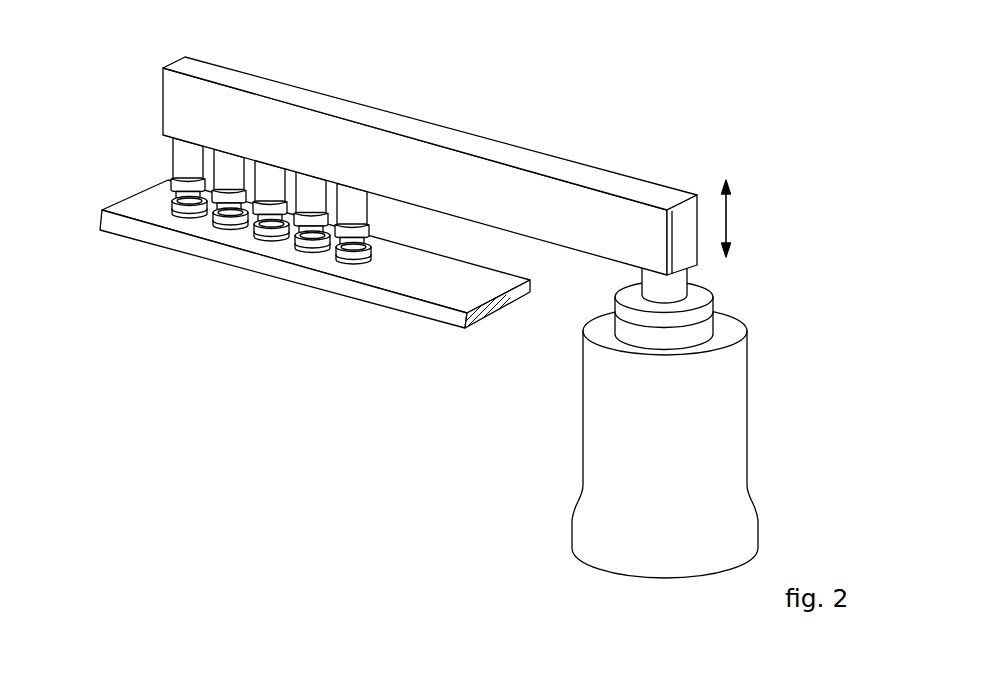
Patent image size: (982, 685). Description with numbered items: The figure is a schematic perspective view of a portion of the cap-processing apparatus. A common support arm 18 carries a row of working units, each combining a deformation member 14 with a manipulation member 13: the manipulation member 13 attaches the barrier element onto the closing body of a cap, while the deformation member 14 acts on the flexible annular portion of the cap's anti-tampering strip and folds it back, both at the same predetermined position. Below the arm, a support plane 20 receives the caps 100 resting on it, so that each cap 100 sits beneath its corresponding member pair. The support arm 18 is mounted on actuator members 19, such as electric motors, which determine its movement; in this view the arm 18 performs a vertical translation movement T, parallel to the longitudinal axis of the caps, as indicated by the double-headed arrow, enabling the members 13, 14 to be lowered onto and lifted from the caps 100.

The manipulation member 13 is at (185, 189).
The deformation member 14 is at (202, 181).
The support arm 18 is at (500, 182).
The actuator members 19 is at (732, 402).
The support plane 20 is at (138, 211).
The cap 100 is at (221, 223).
The translation movement T is at (726, 218).